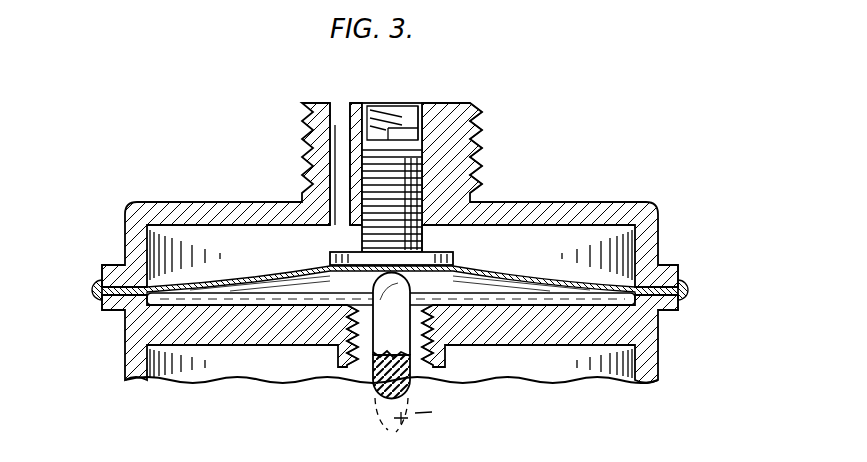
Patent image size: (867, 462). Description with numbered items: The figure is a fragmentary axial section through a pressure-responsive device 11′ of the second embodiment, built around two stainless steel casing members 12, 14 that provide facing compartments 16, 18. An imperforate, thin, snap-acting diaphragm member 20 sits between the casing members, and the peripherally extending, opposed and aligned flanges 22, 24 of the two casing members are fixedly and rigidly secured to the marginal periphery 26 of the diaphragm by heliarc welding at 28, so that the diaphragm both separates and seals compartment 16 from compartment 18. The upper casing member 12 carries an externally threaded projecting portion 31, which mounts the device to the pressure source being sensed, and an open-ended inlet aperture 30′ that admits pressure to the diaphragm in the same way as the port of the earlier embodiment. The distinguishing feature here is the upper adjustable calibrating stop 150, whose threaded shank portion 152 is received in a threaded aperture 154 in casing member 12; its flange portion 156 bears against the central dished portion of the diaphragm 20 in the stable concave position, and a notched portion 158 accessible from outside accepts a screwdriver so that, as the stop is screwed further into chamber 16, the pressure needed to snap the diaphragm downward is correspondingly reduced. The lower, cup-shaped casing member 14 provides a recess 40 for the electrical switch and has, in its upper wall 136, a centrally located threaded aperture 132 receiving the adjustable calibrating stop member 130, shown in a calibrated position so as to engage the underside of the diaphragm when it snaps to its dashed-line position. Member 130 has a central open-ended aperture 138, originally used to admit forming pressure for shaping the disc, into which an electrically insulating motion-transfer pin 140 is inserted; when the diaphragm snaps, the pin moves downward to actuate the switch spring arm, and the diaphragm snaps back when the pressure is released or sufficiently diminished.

The pressure-responsive device 11′ is at (598, 135).
The casing member 12 is at (233, 205).
The casing member 14 is at (655, 345).
The cavity 16 is at (550, 233).
The cavity 18 is at (553, 300).
The diaphragm member 20 is at (283, 268).
The flange 22 is at (117, 272).
The flange 24 is at (117, 305).
The marginal periphery 26 is at (110, 288).
The weld 28 is at (95, 291).
The inlet aperture 30′ is at (342, 107).
The externally threaded projecting portion 31 is at (468, 126).
The recess 40 is at (592, 378).
The adjustable calibrating stop member 130 is at (373, 368).
The threaded aperture 132 is at (445, 333).
The upper wall 136 is at (230, 340).
The open-ended aperture 138 is at (386, 373).
The motion-transfer pin 140 is at (410, 390).
The upper adjustable calibrating stop 150 is at (428, 238).
The threaded shank portion 152 is at (368, 238).
The threaded aperture 154 is at (414, 108).
The flange portion 156 is at (456, 258).
The notched portion 158 is at (393, 140).